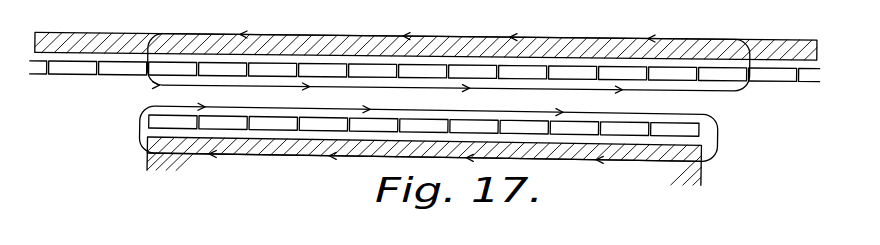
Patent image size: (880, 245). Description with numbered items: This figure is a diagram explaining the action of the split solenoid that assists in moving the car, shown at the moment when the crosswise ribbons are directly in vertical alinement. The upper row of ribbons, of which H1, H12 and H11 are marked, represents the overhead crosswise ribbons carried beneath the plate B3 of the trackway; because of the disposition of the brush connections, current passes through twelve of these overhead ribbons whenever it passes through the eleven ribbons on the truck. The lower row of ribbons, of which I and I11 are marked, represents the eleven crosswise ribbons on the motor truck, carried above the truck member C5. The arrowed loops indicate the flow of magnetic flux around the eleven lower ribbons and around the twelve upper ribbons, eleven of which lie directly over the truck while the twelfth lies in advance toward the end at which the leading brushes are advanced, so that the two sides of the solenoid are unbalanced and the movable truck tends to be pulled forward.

The hatched plate / bar B3 is at (468, 47).
The segment block H1 is at (123, 63).
The segment block H12 is at (175, 65).
The segment block H11 is at (223, 70).
The lower hatched plate C5 is at (628, 149).
The lower segment block I is at (154, 128).
The lower segment block I11 is at (699, 134).